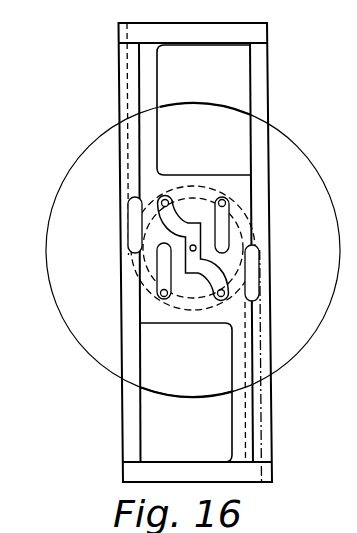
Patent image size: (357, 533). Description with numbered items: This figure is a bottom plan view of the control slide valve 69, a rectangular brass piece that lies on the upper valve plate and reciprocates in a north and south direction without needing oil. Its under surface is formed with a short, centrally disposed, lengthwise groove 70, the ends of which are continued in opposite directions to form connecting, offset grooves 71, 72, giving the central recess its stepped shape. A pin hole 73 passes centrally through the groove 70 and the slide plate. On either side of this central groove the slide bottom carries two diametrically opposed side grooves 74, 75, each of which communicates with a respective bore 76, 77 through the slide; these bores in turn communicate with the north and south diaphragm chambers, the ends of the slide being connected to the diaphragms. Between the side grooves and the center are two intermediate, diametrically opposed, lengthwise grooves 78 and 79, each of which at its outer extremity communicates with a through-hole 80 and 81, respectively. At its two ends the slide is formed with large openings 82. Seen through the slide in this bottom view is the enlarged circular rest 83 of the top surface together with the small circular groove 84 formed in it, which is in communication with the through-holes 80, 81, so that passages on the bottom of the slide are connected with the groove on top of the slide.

The control slide valve 69 is at (263, 370).
The lengthwise groove 70 is at (196, 258).
The offset groove 71 is at (167, 199).
The offset groove 72 is at (222, 298).
The pin hole 73 is at (190, 248).
The side groove 74 is at (135, 215).
The side groove 75 is at (258, 278).
The bore 76 is at (132, 59).
The bore 77 is at (260, 401).
The intermediate lengthwise groove 78 is at (158, 275).
The intermediate lengthwise groove 79 is at (224, 225).
The through-hole 80 is at (161, 296).
The through-hole 81 is at (226, 202).
The large opening 82 is at (235, 73).
The circular rest 83 is at (57, 297).
The small circular groove 84 is at (218, 190).